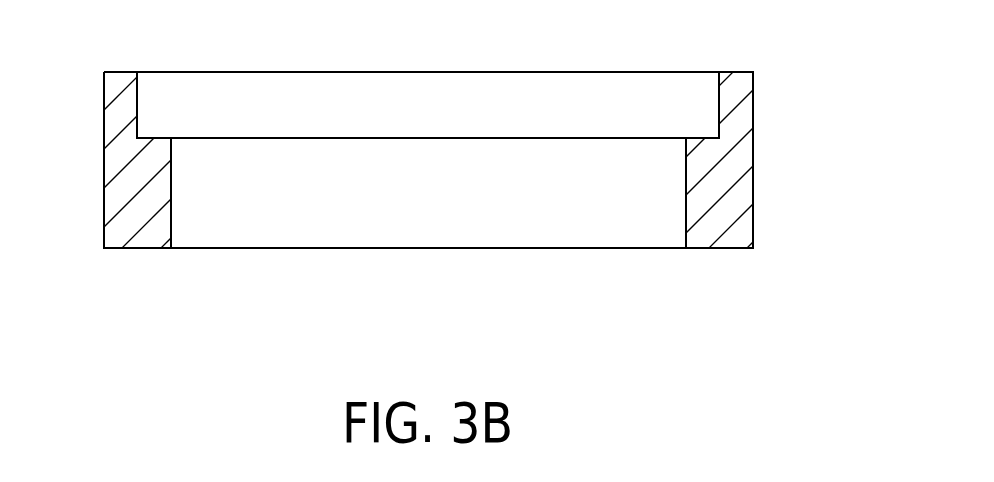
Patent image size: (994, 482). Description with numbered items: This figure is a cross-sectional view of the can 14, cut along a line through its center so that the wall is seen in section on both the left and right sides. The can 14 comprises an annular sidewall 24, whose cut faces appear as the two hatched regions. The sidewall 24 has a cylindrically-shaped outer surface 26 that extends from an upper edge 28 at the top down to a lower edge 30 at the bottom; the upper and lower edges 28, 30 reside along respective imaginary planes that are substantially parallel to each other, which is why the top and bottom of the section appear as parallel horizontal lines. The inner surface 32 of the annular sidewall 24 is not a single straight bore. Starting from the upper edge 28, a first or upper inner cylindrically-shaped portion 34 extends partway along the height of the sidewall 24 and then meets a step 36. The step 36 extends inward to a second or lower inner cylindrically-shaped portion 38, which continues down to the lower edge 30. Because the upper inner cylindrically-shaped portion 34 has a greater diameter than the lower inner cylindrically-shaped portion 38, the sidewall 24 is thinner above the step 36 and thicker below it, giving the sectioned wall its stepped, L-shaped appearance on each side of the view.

The can 14 is at (826, 88).
The annular sidewall 24 is at (118, 196).
The outer surface 26 is at (96, 112).
The upper edge 28 is at (122, 72).
The lower edge 30 is at (138, 248).
The inner surface 32 is at (184, 193).
The upper inner cylindrically-shaped portion 34 is at (719, 106).
The step 36 is at (161, 138).
The lower inner cylindrically-shaped portion 38 is at (686, 175).